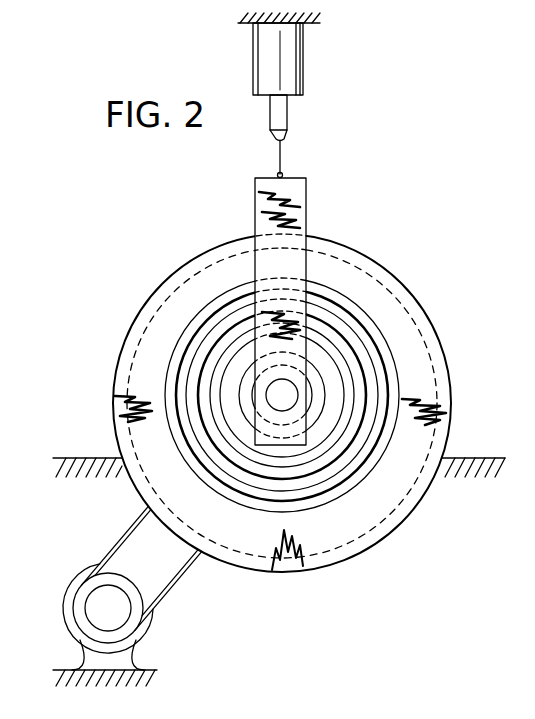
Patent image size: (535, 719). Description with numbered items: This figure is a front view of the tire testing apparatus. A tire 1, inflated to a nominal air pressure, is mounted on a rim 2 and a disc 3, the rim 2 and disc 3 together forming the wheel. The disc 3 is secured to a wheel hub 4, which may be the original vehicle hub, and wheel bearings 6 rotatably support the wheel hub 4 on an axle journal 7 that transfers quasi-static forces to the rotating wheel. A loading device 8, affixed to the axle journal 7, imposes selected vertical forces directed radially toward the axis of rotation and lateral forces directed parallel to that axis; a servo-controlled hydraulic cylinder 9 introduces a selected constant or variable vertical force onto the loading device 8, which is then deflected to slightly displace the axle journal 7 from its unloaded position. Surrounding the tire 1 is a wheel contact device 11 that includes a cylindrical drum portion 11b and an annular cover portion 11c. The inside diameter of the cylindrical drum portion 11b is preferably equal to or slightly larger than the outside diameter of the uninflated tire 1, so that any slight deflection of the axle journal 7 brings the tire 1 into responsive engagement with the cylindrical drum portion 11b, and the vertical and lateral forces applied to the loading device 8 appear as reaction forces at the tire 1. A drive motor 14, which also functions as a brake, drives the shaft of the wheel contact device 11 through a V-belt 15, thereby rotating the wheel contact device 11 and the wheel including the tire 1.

The tire 1 is at (327, 502).
The rim 2 is at (380, 412).
The disc 3 is at (352, 382).
The wheel hub 4 is at (315, 377).
The wheel bearings 6 is at (253, 400).
The axle journal 7 is at (265, 393).
The loading device 8 is at (298, 200).
The servo-controlled hydraulic cylinder 9 is at (298, 62).
The wheel contact device 11 is at (377, 296).
The cylindrical drum portion 11b is at (254, 565).
The annular cover portion 11c is at (386, 505).
The drive motor 14 is at (72, 585).
The V-belt 15 is at (118, 545).